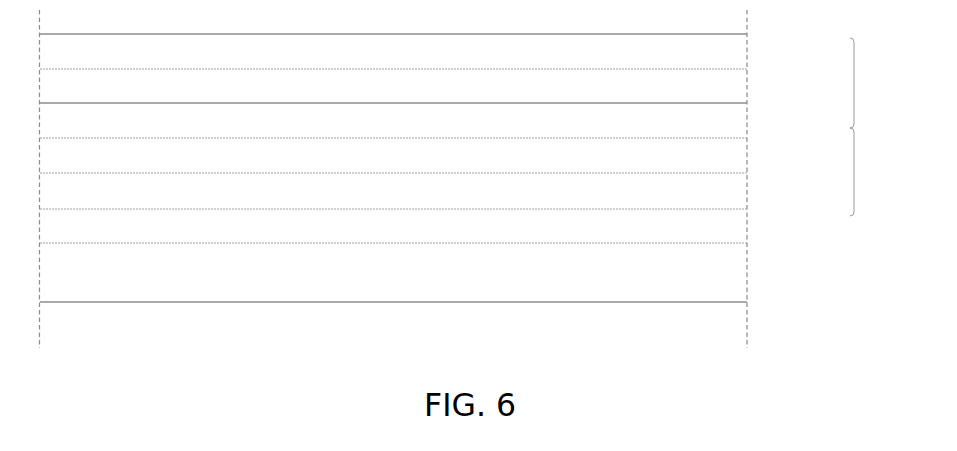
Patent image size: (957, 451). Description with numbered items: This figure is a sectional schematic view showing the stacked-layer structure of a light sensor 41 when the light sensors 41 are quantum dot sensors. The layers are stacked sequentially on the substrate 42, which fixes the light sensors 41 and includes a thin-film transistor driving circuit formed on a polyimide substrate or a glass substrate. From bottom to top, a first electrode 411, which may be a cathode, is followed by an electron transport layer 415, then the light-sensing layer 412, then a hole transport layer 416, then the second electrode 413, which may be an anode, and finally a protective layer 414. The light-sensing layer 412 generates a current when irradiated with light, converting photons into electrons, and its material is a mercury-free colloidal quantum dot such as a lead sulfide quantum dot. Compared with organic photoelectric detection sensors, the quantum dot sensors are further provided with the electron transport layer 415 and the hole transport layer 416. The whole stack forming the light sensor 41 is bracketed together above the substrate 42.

The light sensor 41 is at (870, 127).
The first electrode 411 is at (701, 232).
The light-sensing layer 412 is at (701, 155).
The second electrode 413 is at (701, 86).
The protective layer 414 is at (701, 51).
The electron transport layer 415 is at (701, 191).
The hole transport layer 416 is at (701, 121).
The substrate 42 is at (701, 277).